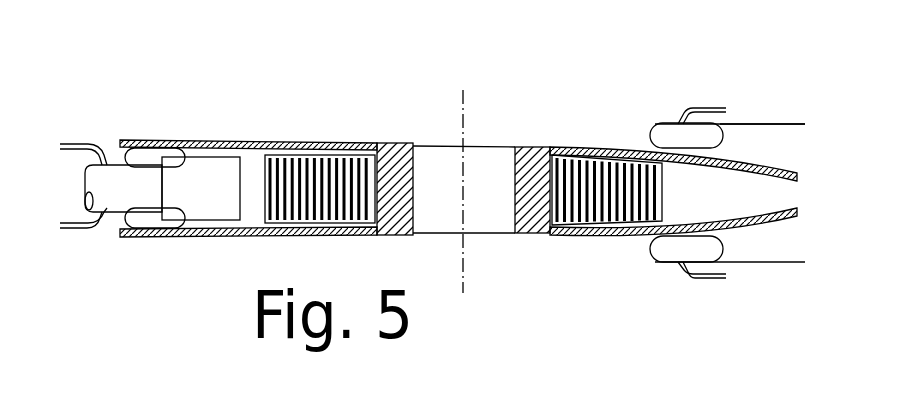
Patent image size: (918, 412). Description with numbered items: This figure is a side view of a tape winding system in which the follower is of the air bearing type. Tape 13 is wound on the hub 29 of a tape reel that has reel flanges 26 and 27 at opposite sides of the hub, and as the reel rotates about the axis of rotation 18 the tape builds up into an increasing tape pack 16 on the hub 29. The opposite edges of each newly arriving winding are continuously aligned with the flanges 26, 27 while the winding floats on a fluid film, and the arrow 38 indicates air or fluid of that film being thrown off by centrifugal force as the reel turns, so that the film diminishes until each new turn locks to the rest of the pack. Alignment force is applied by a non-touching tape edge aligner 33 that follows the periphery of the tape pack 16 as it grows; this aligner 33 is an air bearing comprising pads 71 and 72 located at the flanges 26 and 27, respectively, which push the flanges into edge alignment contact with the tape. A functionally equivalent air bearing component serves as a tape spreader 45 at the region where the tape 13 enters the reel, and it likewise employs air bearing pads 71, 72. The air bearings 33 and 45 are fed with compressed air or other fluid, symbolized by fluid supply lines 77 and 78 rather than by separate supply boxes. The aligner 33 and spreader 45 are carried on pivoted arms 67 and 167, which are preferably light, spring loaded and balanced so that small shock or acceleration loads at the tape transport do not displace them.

The tape 13 is at (240, 191).
The tape pack 16 is at (316, 138).
The axis of rotation 18 is at (466, 103).
The reel flange 26 is at (578, 150).
The reel flange 27 is at (750, 229).
The hub 29 is at (412, 143).
The tape edge aligner 33 is at (649, 110).
The arrow 38 is at (272, 138).
The tape spreader 45 is at (108, 136).
The arm 67 is at (775, 123).
The air bearing pad 71 is at (160, 157).
The air bearing pad 72 is at (145, 221).
The fluid supply line 77 is at (76, 144).
The fluid supply line 78 is at (73, 229).
The arm 167 is at (790, 264).